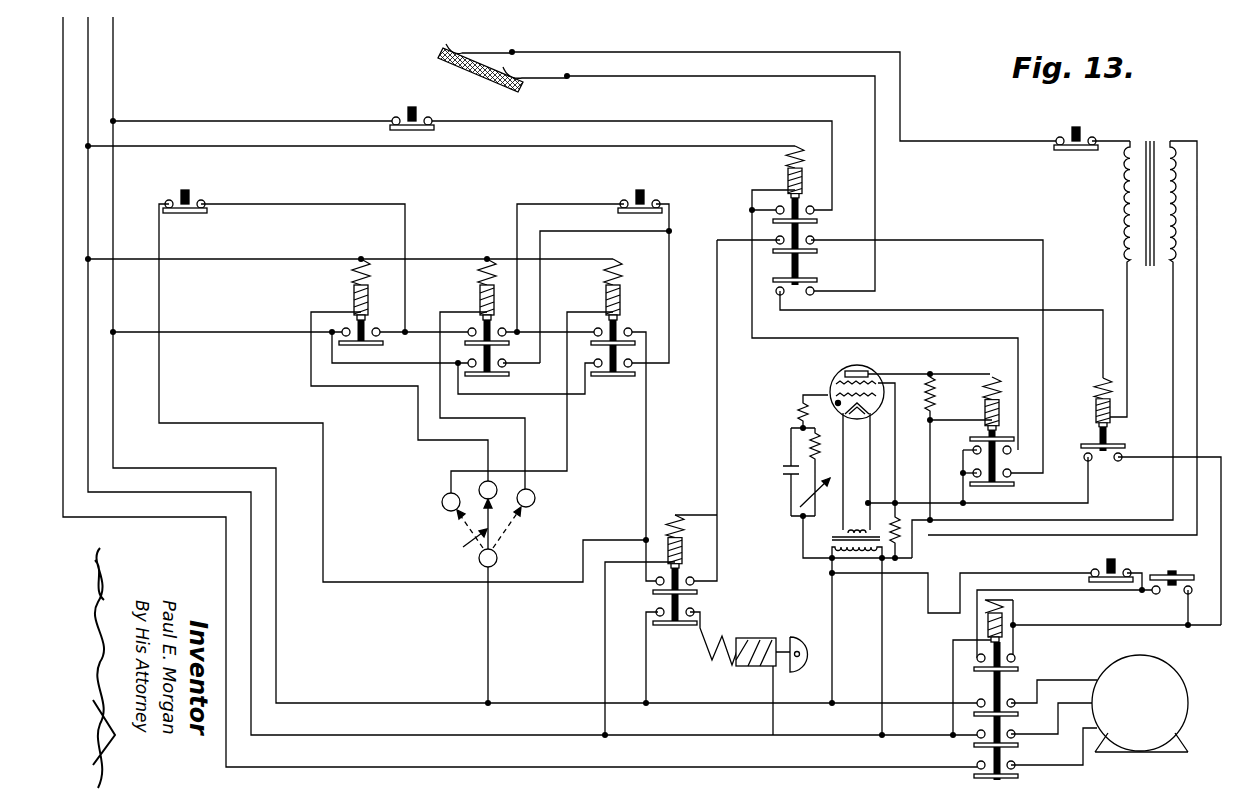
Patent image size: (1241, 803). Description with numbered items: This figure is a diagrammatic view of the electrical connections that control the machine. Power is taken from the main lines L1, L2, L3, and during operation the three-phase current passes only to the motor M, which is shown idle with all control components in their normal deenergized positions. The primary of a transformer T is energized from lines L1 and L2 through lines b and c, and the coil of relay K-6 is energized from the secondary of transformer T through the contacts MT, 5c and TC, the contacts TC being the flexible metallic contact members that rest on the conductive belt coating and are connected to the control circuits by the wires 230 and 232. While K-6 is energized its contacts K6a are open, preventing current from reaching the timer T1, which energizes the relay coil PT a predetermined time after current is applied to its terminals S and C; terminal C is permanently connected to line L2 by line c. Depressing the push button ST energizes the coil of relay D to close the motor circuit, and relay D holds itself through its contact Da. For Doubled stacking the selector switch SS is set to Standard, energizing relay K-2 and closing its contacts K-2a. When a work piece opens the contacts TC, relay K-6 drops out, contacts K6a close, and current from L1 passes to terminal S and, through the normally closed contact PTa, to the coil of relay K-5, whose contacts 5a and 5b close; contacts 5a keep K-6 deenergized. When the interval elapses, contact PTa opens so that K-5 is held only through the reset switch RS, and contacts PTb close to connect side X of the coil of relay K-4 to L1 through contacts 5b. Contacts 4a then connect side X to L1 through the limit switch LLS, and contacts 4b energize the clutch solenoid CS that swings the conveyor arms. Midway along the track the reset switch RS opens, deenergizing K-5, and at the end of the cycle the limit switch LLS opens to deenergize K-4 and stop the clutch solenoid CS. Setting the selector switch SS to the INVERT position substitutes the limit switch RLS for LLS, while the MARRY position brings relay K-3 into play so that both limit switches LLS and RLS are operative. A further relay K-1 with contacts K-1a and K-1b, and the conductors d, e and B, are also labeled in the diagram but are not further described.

The main line L1 is at (113, 53).
The main line L2 is at (88, 100).
The main line L3 is at (63, 70).
The reset switch RS is at (471, 147).
The contact members TC is at (504, 67).
The wire 230 is at (650, 52).
The wire 232 is at (698, 78).
The switch contacts MT is at (1092, 126).
The transformer T is at (1054, 349).
The limit switch LLS is at (404, 377).
The limit switch RLS is at (594, 267).
The relay coil K-5 is at (883, 298).
The relay contacts 5a is at (818, 222).
The relay contacts 5b is at (818, 252).
The relay contacts 5c is at (818, 283).
The conductor e is at (1010, 240).
The line c is at (990, 338).
The relay coil K-2 is at (399, 370).
The relay contacts K-2a is at (378, 346).
The relay K-3 is at (489, 374).
The relay K-1 is at (554, 420).
The relay K-1 contact a K-1a is at (636, 344).
The relay K-1 contact b K-1b is at (636, 376).
The Invert position INVERT is at (442, 499).
The Marry position MARRY is at (535, 497).
The selector switch SS is at (426, 601).
The conductor d is at (717, 464).
The side of relay coil X is at (696, 501).
The relay K-4 is at (657, 626).
The relay contacts 4a is at (698, 582).
The relay contacts 4b is at (688, 653).
The clutch solenoid CS is at (749, 673).
The timer T1 is at (862, 408).
The timer terminal S is at (895, 503).
The timer terminal C is at (930, 520).
The line b is at (832, 655).
The conductor B is at (962, 583).
The timer relay coil PT is at (966, 428).
The timer contact PTa is at (1012, 444).
The timer contacts PTb is at (1012, 486).
The relay coil K-6 is at (1121, 414).
The relay contacts K6a is at (1092, 534).
The push button ST is at (1176, 590).
The relay D is at (1023, 690).
The relay contact Da is at (1020, 670).
The motor M is at (1140, 703).